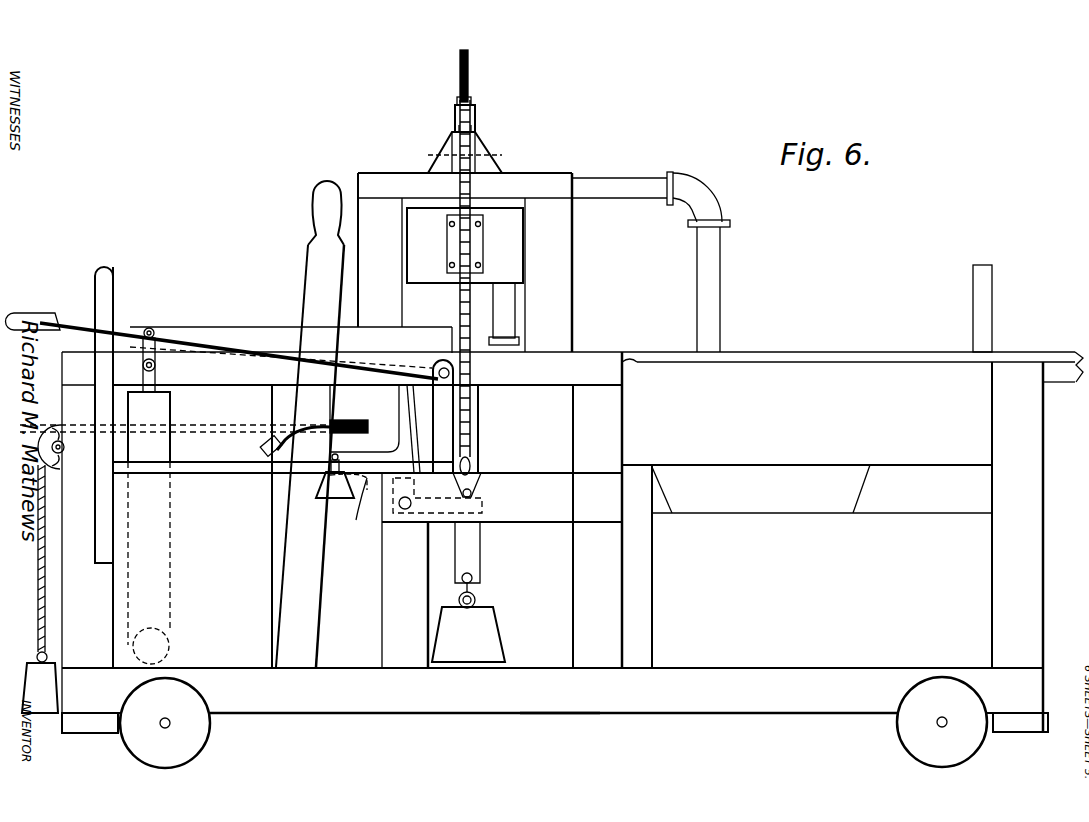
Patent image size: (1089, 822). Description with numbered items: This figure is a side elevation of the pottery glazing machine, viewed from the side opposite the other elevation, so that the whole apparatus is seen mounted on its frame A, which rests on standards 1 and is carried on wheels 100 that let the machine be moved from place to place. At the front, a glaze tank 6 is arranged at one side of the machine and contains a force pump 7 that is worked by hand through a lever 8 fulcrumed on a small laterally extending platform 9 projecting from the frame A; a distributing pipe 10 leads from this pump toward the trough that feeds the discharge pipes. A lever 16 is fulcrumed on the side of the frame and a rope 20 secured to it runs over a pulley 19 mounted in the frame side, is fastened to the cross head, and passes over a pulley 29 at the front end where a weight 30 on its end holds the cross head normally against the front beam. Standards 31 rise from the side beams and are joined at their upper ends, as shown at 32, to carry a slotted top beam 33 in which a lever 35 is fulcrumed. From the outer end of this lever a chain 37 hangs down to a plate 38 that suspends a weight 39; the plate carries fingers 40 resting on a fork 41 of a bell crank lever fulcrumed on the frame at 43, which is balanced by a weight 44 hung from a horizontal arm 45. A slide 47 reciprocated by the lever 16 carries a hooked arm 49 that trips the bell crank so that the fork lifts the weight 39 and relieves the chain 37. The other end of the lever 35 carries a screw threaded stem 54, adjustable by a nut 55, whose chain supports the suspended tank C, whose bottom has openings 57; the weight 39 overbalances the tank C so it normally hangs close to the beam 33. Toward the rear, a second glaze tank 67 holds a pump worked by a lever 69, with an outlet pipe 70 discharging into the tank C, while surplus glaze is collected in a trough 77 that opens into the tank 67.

The standards 1 is at (997, 548).
The glaze tank 6 is at (555, 500).
The force pump 7 is at (170, 420).
The lever 8 is at (148, 322).
The platform 9 is at (348, 505).
The distributing pipe 10 is at (170, 640).
The lever 16 is at (305, 280).
The pulley 19 is at (355, 414).
The rope 20 is at (46, 605).
The pulley 29 is at (50, 432).
The weight 30 is at (40, 688).
The standards 31 is at (593, 322).
The connection 32 is at (552, 180).
The top beam 33 is at (495, 165).
The lever 35 is at (455, 117).
The chain 37 is at (460, 188).
The plate 38 is at (481, 555).
The weight 39 is at (468, 634).
The fingers 40 is at (472, 493).
The fork 41 is at (483, 508).
The fulcrum 43 is at (405, 509).
The weight 44 is at (335, 476).
The arm 45 is at (364, 426).
The slide 47 is at (418, 442).
The hooked arm 49 is at (446, 362).
The screw threaded stem 54 is at (460, 72).
The nut 55 is at (471, 100).
The openings 57 is at (447, 238).
The glaze tank 67 is at (807, 566).
The lever 69 is at (843, 356).
The outlet pipe 70 is at (700, 268).
The trough 77 is at (843, 490).
The wheels 100 is at (205, 735).
The frame A is at (575, 750).
The tank C is at (508, 247).